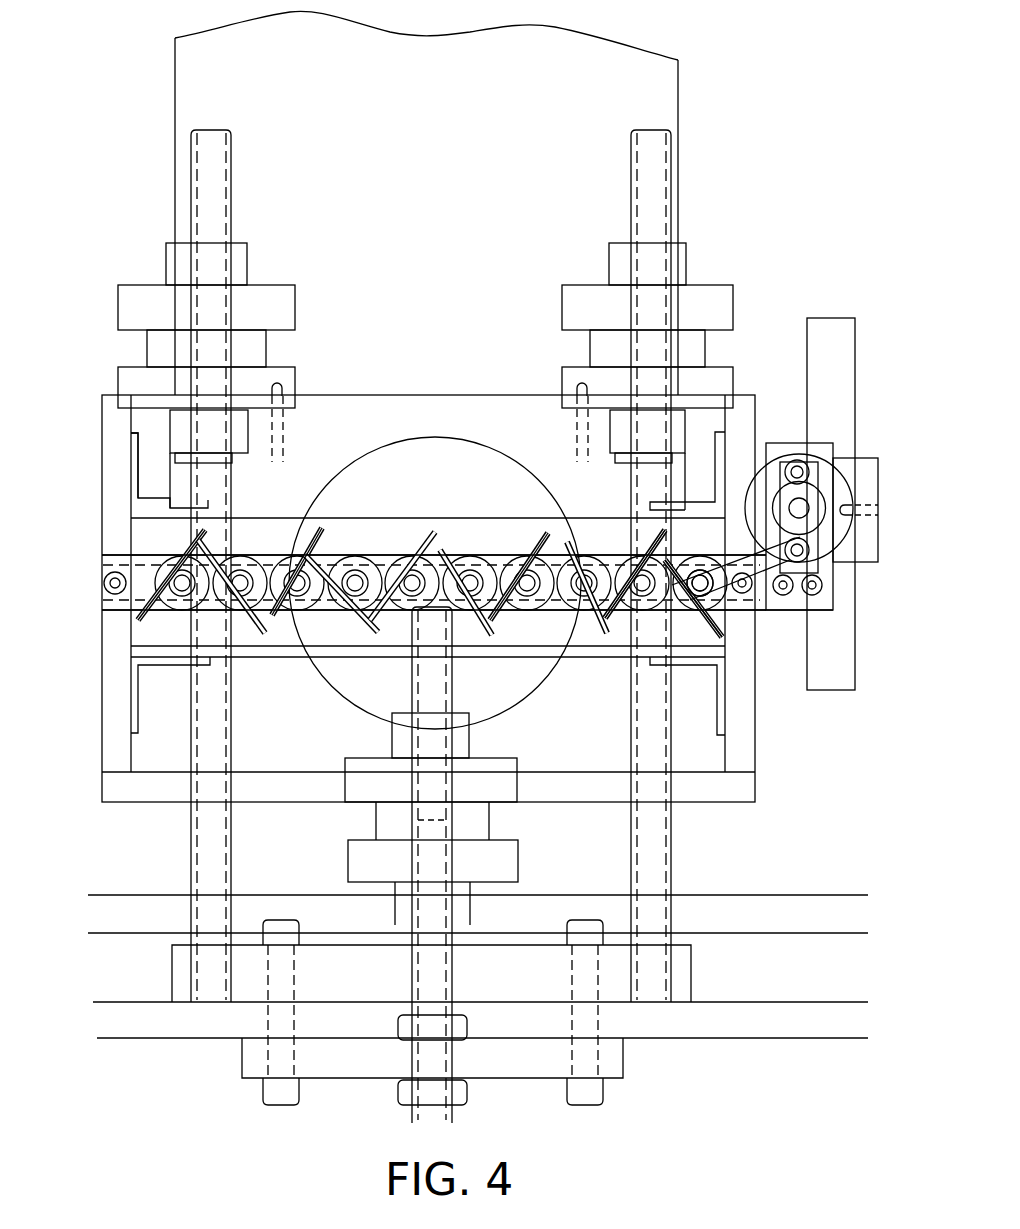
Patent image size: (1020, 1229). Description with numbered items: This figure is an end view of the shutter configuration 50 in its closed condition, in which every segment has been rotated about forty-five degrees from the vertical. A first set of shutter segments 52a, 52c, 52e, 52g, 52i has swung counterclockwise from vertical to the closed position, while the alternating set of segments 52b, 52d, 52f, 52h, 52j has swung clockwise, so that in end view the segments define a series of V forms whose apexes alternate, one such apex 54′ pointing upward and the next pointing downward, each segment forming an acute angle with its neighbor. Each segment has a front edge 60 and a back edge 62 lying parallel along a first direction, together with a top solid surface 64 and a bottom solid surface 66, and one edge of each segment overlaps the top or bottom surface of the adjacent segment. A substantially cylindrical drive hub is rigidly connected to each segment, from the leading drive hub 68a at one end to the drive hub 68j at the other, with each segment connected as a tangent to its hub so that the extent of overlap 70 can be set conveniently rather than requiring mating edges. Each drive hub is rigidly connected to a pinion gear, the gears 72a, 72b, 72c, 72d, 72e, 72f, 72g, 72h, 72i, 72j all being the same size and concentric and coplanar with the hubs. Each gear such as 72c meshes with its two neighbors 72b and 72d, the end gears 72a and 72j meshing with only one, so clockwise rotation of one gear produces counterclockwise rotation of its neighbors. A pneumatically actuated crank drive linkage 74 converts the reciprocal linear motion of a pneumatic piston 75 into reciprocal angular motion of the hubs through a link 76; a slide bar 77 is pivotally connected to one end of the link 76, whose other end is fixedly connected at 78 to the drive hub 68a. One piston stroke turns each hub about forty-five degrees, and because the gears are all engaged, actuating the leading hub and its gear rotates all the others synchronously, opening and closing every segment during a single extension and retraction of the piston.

The shutter configuration 50 is at (438, 548).
The shutter segment 52a is at (703, 612).
The shutter segment 52b is at (636, 566).
The shutter segment 52c is at (587, 605).
The shutter segment 52d is at (523, 552).
The shutter segment 52e is at (472, 612).
The shutter segment 52f is at (410, 556).
The shutter segment 52g is at (362, 612).
The shutter segment 52h is at (303, 556).
The shutter segment 52i is at (247, 612).
The shutter segment 52j is at (178, 557).
The upwardly pointing apex 54′ is at (323, 528).
The front edge 60 is at (720, 625).
The back edge 62 is at (655, 552).
The top solid surface 64 is at (718, 622).
The bottom solid surface 66 is at (708, 620).
The drive hub 68a is at (730, 603).
The drive hub 68j is at (178, 605).
The extent of overlap 70 is at (202, 545).
The pinion gear 72a is at (707, 560).
The pinion gear 72b is at (643, 557).
The pinion gear 72c is at (553, 397).
The pinion gear 72d is at (576, 600).
The pinion gear 72e is at (466, 592).
The pinion gear 72f is at (402, 576).
The pinion gear 72g is at (341, 593).
The pinion gear 72h is at (297, 571).
The pinion gear 72i is at (231, 586).
The pinion gear 72j is at (205, 530).
The crank drive linkage 74 is at (833, 476).
The pneumatic piston 75 is at (853, 402).
The link 76 is at (800, 612).
The slide bar 77 is at (820, 500).
The fixed connection 78 is at (655, 608).